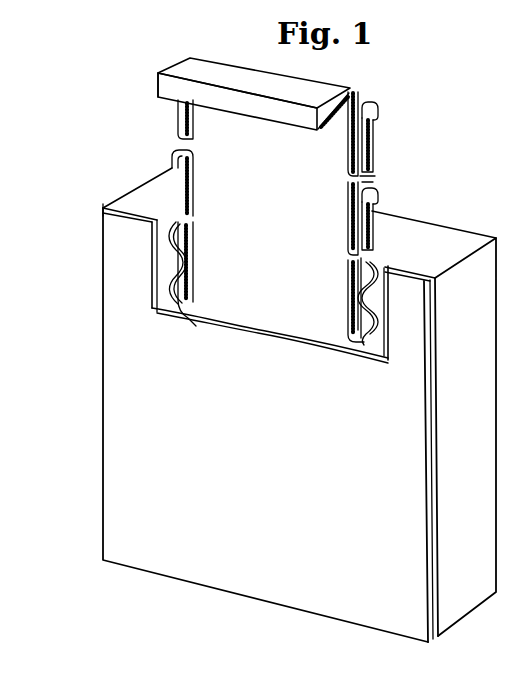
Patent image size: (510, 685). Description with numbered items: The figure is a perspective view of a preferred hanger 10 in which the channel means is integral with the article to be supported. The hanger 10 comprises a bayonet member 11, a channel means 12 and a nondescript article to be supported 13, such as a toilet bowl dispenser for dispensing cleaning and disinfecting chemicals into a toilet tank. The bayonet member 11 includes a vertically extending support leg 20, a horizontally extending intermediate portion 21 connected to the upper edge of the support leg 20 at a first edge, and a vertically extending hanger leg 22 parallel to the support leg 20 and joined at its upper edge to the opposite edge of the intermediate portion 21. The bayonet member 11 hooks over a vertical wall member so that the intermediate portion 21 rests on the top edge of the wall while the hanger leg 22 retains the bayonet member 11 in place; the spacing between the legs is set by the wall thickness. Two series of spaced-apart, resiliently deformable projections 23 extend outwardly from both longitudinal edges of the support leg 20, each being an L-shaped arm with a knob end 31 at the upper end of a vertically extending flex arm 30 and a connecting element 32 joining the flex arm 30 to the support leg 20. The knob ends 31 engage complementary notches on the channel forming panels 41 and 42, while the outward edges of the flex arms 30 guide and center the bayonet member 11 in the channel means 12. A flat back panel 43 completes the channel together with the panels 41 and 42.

The hanger 10 is at (86, 344).
The bayonet member 11 is at (345, 71).
The channel means 12 is at (165, 294).
The article to be supported 13 is at (148, 197).
The support leg 20 is at (323, 182).
The intermediate portion 21 is at (263, 80).
The hanger leg 22 is at (180, 93).
The projections 23 is at (168, 182).
The flex arm 30 is at (369, 135).
The knob end 31 is at (368, 108).
The connecting element 32 is at (358, 175).
The channel forming panel 41 is at (170, 248).
The channel forming panel 42 is at (375, 292).
The flat back panel 43 is at (135, 405).